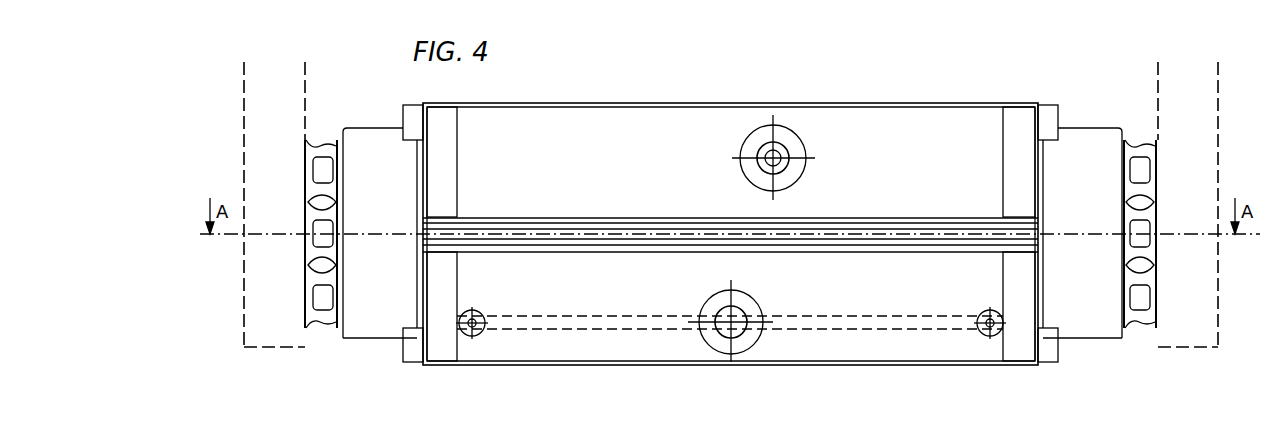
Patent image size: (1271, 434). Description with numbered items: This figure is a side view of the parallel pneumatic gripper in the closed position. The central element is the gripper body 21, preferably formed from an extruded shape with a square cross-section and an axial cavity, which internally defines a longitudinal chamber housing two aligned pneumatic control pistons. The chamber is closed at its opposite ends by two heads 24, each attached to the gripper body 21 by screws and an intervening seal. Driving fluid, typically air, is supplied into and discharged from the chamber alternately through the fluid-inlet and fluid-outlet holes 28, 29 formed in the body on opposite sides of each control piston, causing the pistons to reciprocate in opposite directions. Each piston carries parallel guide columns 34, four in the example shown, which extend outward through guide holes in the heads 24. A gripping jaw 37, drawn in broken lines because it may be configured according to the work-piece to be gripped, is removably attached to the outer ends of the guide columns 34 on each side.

The gripper body 21 is at (538, 343).
The head 24 is at (382, 327).
The fluid-inlet and fluid-outlet hole 28 is at (722, 330).
The fluid-inlet and fluid-outlet hole 29 is at (790, 145).
The guide column 34 is at (322, 327).
The gripping jaw 37 is at (243, 305).